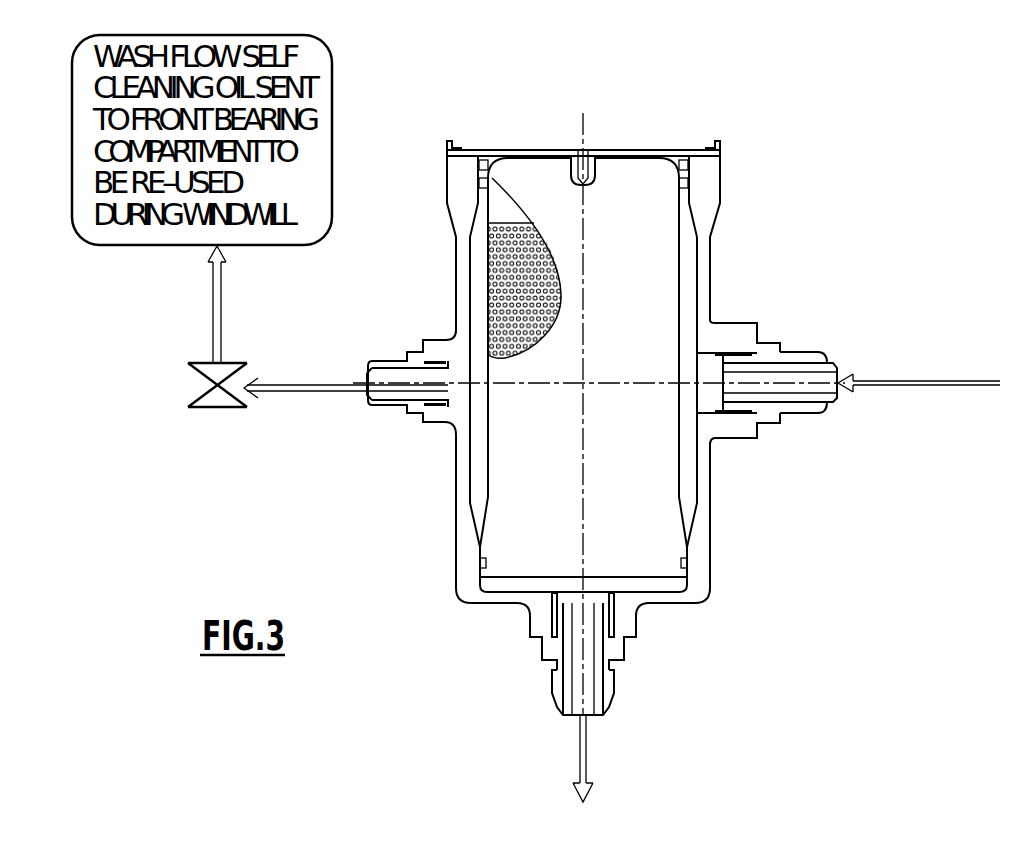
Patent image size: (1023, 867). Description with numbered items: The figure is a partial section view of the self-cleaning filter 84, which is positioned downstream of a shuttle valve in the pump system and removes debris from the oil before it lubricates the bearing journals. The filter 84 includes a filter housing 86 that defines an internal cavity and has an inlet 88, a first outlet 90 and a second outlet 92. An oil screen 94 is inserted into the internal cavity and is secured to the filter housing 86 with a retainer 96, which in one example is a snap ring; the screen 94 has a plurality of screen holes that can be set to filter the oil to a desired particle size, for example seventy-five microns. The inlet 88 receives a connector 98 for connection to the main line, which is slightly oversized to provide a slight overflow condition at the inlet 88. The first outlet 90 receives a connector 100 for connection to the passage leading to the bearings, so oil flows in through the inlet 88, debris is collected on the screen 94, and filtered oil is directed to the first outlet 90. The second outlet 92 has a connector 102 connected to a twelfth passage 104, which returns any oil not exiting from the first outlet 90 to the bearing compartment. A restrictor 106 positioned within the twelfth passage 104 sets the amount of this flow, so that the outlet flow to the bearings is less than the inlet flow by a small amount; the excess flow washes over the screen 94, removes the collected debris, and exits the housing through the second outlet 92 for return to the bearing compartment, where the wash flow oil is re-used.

The self-cleaning filter 84 is at (790, 153).
The filter housing 86 is at (512, 597).
The inlet 88 is at (733, 337).
The first outlet 90 is at (630, 620).
The second outlet 92 is at (437, 420).
The oil screen 94 is at (502, 208).
The retainer 96 is at (453, 142).
The connector 98 is at (805, 357).
The connector 100 is at (618, 683).
The connector 102 is at (383, 366).
The twelfth passage 104 is at (293, 393).
The restrictor 106 is at (234, 360).